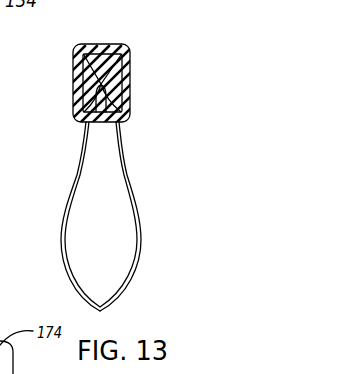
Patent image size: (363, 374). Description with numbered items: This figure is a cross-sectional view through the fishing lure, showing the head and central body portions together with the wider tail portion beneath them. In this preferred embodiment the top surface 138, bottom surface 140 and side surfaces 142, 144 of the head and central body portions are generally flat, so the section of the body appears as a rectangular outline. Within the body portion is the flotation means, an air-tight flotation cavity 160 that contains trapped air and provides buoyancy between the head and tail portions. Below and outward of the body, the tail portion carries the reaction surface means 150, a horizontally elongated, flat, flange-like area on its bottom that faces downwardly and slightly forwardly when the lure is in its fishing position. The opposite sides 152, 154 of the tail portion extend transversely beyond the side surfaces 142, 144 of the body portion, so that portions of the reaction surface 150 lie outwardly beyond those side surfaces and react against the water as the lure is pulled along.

The top surface 138 is at (100, 44).
The bottom surface 140 is at (102, 122).
The side surface 142 is at (78, 85).
The side surface 144 is at (127, 84).
The reaction surface means 150 is at (110, 229).
The side of the tail portion 152 is at (63, 229).
The side of the tail portion 154 is at (132, 266).
The flotation cavity 160 is at (113, 91).